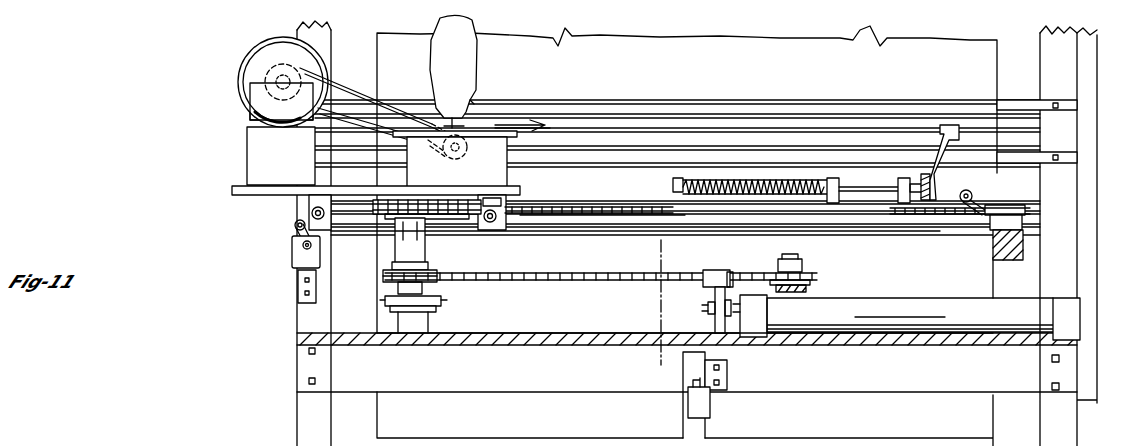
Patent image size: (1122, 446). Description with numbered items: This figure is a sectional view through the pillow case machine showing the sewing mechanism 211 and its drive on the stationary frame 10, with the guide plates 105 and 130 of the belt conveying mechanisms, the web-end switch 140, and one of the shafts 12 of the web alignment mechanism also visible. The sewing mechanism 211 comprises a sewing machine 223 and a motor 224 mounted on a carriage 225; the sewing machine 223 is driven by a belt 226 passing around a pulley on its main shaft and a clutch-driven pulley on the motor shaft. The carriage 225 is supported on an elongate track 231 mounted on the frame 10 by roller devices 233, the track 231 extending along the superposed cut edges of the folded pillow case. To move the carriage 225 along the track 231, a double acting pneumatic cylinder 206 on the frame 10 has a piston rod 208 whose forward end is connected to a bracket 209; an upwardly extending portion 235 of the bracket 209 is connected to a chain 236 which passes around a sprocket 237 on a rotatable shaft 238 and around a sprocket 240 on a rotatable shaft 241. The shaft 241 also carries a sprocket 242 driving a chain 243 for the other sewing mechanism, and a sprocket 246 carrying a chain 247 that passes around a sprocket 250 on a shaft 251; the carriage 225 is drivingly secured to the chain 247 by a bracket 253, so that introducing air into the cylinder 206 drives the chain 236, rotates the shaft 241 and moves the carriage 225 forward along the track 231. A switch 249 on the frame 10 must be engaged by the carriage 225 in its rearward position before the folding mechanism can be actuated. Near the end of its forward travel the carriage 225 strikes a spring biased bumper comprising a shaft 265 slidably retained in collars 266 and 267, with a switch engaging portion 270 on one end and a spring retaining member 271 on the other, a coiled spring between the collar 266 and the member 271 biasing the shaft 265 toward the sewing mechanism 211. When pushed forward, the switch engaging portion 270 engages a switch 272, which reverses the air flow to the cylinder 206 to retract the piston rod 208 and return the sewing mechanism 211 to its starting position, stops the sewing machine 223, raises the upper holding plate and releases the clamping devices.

The stationary frame 10 is at (297, 408).
The shaft 12 is at (660, 251).
The guide plate 105 is at (696, 136).
The guide plate 130 is at (685, 319).
The switch 140 is at (704, 403).
The pneumatic cylinder 206 is at (923, 319).
The piston rod 208 is at (733, 322).
The bracket 209 is at (716, 302).
The sewing mechanism 211 is at (238, 85).
The sewing machine 223 is at (471, 76).
The motor 224 is at (266, 52).
The carriage 225 is at (246, 185).
The belt 226 is at (357, 96).
The elongate track 231 is at (881, 232).
The roller devices 233 is at (308, 214).
The upwardly extending portion 235 is at (733, 274).
The chain 236 is at (680, 274).
The sprocket 237 is at (811, 276).
The rotatable shaft 238 is at (801, 262).
The sprocket 240 is at (393, 268).
The rotatable shaft 241 is at (404, 286).
The sprocket 242 is at (400, 312).
The chain 243 is at (440, 299).
The sprocket 246 is at (425, 200).
The chain 247 is at (566, 207).
The switch 249 is at (292, 252).
The sprocket 250 is at (1018, 212).
The shaft 251 is at (1010, 205).
The bracket 253 is at (492, 198).
The shaft 265 is at (862, 185).
The collar 266 is at (830, 178).
The collar 267 is at (906, 178).
The switch engaging portion 270 is at (942, 176).
The spring retaining member 271 is at (676, 178).
The switch 272 is at (978, 200).